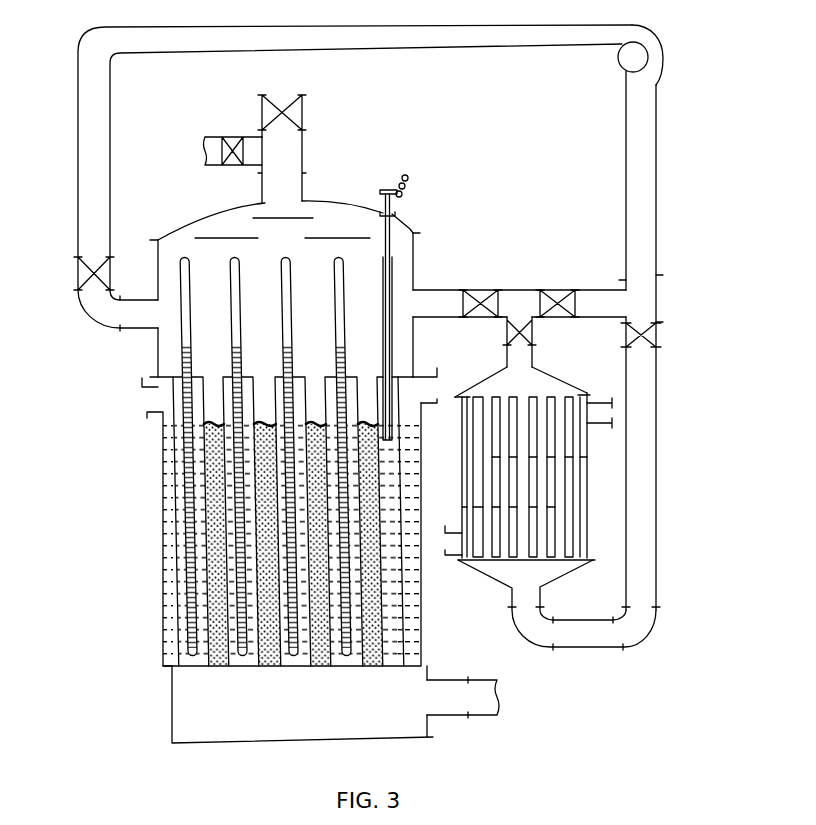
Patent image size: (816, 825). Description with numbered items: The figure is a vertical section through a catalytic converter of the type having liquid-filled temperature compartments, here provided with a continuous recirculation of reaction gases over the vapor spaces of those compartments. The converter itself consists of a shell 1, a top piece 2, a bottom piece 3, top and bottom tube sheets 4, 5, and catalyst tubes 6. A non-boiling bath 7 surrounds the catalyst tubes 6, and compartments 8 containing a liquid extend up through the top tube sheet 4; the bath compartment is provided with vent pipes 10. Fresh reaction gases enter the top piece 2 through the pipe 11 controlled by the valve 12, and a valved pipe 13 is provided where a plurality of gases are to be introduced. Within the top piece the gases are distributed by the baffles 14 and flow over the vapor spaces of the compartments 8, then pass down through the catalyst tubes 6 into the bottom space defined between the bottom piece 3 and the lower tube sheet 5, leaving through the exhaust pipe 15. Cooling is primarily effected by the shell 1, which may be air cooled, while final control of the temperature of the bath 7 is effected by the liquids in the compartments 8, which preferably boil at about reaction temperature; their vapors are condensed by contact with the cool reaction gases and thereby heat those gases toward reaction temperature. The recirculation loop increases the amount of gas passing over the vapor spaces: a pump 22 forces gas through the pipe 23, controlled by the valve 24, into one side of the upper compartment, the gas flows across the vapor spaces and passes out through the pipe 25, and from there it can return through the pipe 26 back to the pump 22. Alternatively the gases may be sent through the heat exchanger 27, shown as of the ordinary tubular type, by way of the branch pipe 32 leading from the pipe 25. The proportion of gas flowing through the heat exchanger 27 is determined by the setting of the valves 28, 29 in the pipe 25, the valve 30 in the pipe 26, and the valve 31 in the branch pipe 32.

The shell 1 is at (163, 495).
The top piece 2 is at (329, 205).
The bottom piece 3 is at (375, 739).
The top tube sheet 4 is at (415, 372).
The bottom tube sheet 5 is at (170, 668).
The catalyst tubes 6 is at (208, 597).
The non-boiling bath 7 is at (170, 557).
The compartments 8 is at (344, 295).
The vent pipes 10 is at (430, 394).
The pipe 11 is at (262, 190).
The valve 12 is at (302, 121).
The valved pipe 13 is at (216, 136).
The baffles 14 is at (263, 240).
The exhaust pipe 15 is at (440, 680).
The pump 22 is at (641, 53).
The pipe 23 is at (78, 198).
The valve 24 is at (77, 283).
The pipe 25 is at (437, 289).
The pipe 26 is at (580, 360).
The heat exchanger 27 is at (561, 384).
The valve 28 is at (479, 289).
The valve 29 is at (554, 289).
The valve 30 is at (660, 337).
The valve 31 is at (534, 333).
The branch pipe 32 is at (506, 358).